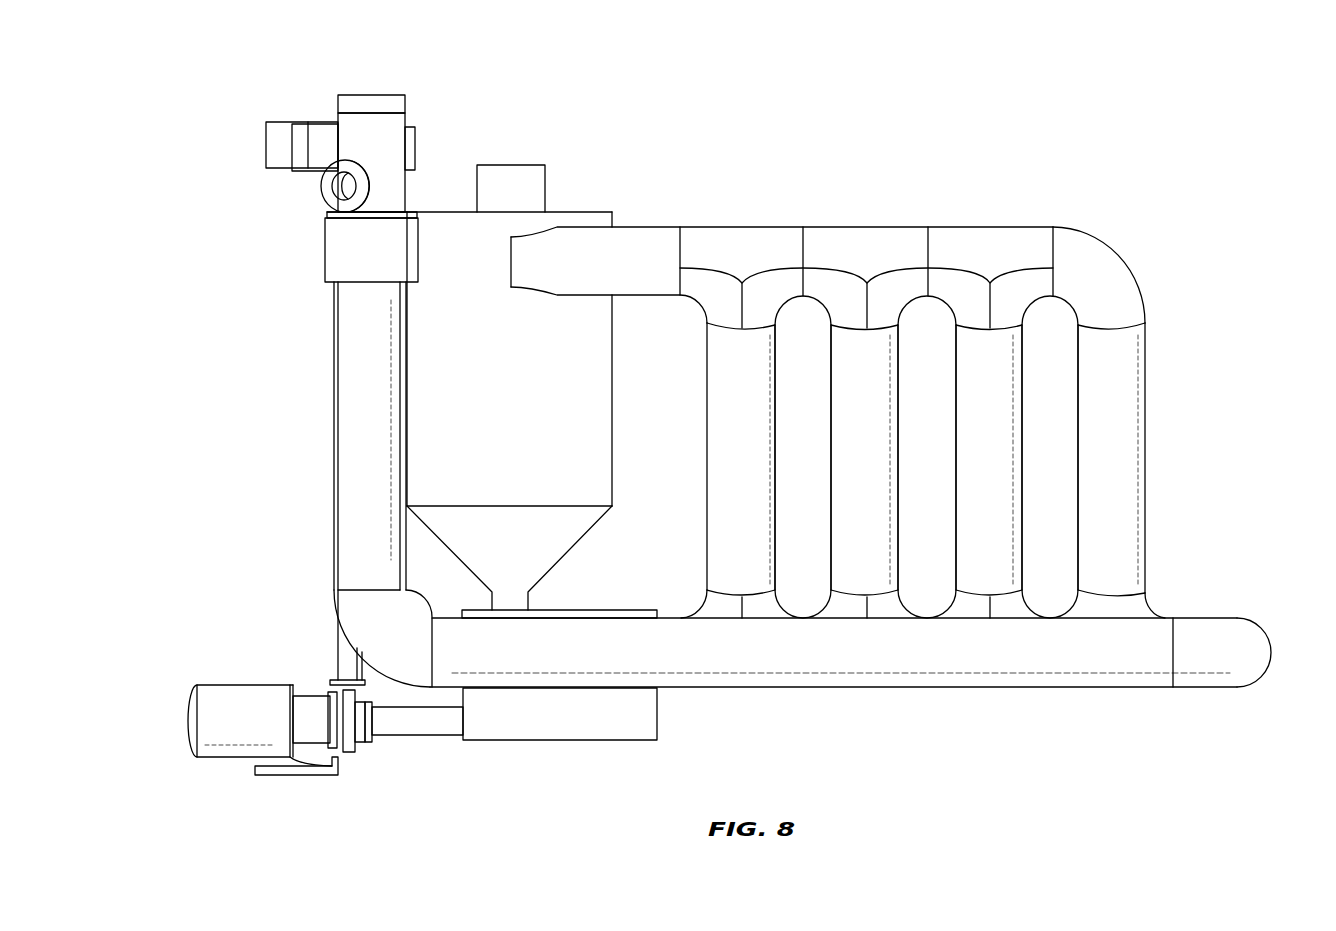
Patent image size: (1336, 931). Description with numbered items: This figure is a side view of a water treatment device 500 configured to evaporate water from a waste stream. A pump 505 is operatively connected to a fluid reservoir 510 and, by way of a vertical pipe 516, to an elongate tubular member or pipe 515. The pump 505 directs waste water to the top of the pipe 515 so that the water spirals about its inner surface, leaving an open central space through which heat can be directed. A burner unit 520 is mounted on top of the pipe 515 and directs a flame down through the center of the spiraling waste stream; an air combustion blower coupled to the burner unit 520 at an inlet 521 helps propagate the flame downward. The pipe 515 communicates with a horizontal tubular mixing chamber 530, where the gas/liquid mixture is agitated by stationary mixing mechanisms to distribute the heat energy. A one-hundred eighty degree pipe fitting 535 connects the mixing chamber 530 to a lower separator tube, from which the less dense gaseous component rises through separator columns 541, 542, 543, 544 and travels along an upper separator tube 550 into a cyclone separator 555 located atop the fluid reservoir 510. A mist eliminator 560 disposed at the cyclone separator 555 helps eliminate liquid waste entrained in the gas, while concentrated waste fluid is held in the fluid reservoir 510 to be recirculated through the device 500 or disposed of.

The water treatment device 500 is at (1080, 130).
The pump 505 is at (230, 722).
The fluid reservoir 510 is at (630, 712).
The elongate tubular member or pipe 515 is at (362, 328).
The vertical pipe 516 is at (347, 662).
The burner unit 520 is at (385, 130).
The inlet 521 is at (344, 182).
The horizontal tubular mixing chamber 530 is at (910, 668).
The one-hundred eighty degree pipe fitting 535 is at (1222, 665).
The separator column 541 is at (1122, 440).
The separator column 542 is at (995, 380).
The separator column 543 is at (878, 352).
The separator column 544 is at (752, 352).
The upper separator tube 550 is at (730, 245).
The cyclone separator 555 is at (458, 425).
The mist eliminator 560 is at (512, 187).